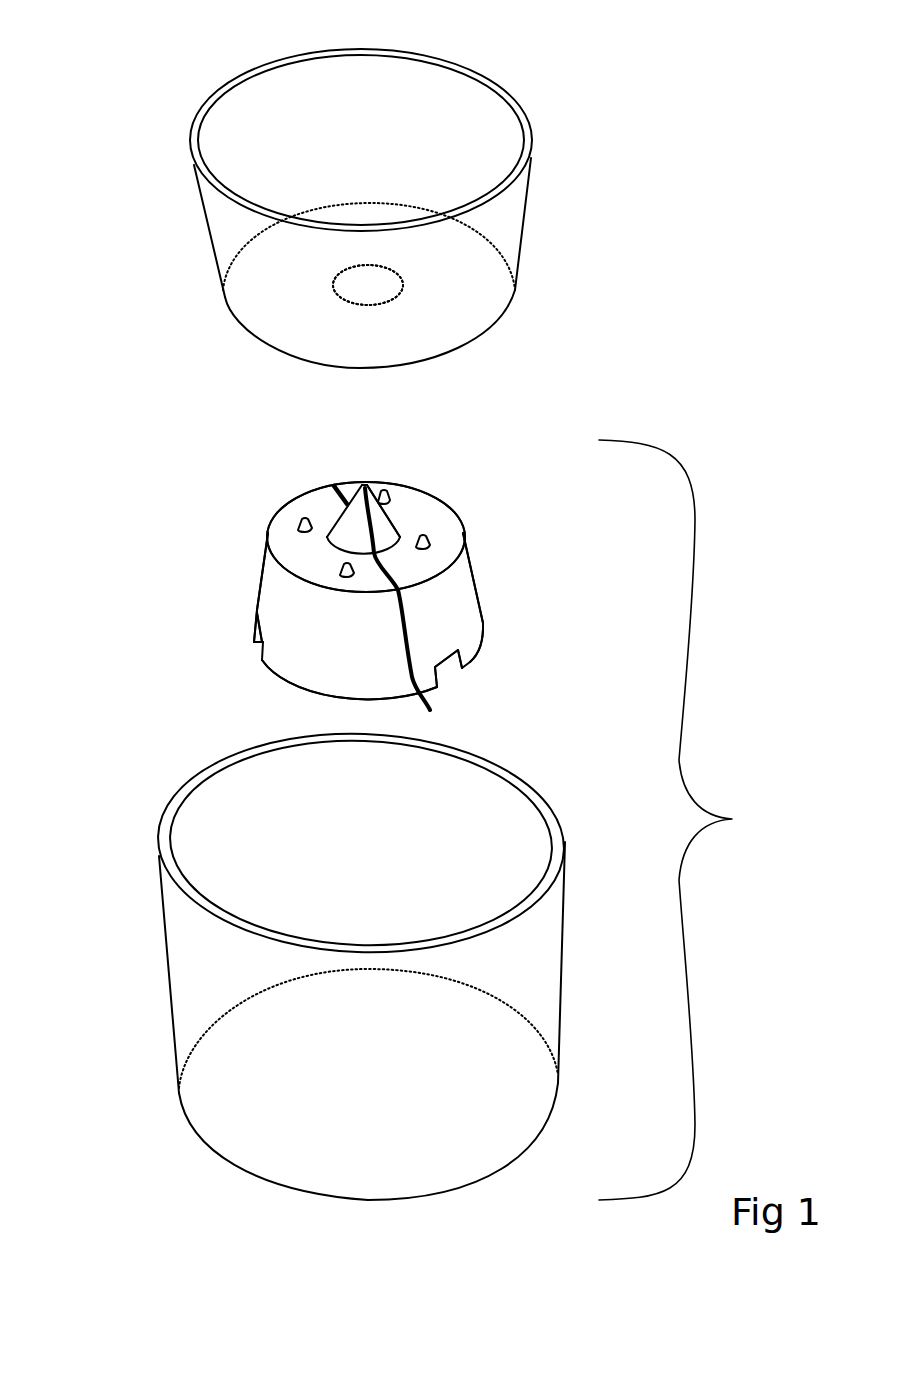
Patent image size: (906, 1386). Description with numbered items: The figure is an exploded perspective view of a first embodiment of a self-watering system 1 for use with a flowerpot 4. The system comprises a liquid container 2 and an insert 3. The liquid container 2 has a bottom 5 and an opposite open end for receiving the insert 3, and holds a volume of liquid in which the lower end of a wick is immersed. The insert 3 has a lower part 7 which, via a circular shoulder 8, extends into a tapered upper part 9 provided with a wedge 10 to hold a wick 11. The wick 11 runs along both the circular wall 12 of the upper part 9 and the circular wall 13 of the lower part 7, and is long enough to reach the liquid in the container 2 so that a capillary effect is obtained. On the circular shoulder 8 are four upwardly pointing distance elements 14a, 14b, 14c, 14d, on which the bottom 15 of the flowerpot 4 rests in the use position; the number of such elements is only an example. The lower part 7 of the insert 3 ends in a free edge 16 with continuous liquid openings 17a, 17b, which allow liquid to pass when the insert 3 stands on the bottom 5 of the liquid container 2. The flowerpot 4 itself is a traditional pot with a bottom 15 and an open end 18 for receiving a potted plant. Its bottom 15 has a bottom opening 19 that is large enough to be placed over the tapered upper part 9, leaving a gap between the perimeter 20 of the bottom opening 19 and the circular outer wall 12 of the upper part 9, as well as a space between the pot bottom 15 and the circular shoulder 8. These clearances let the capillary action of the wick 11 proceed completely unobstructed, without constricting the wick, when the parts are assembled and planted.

The self-watering system 1 is at (690, 820).
The liquid container 2 is at (165, 952).
The insert 3 is at (473, 592).
The flowerpot 4 is at (210, 232).
The bottom 5 is at (233, 1163).
The lower part 7 is at (258, 608).
The circular shoulder 8 is at (297, 553).
The tapered upper part 9 is at (333, 518).
The wedge 10 is at (352, 483).
The wick 11 is at (408, 615).
The circular wall 12 is at (388, 530).
The circular wall 13 is at (468, 632).
The distance element 14a is at (298, 525).
The distance element 14b is at (347, 578).
The distance element 14c is at (432, 540).
The distance element 14d is at (387, 492).
The bottom 15 is at (253, 340).
The free edge 16 is at (282, 680).
The liquid opening 17a is at (257, 645).
The liquid opening 17b is at (447, 670).
The open end 18 is at (457, 115).
The bottom opening 19 is at (357, 287).
The perimeter 20 is at (397, 290).